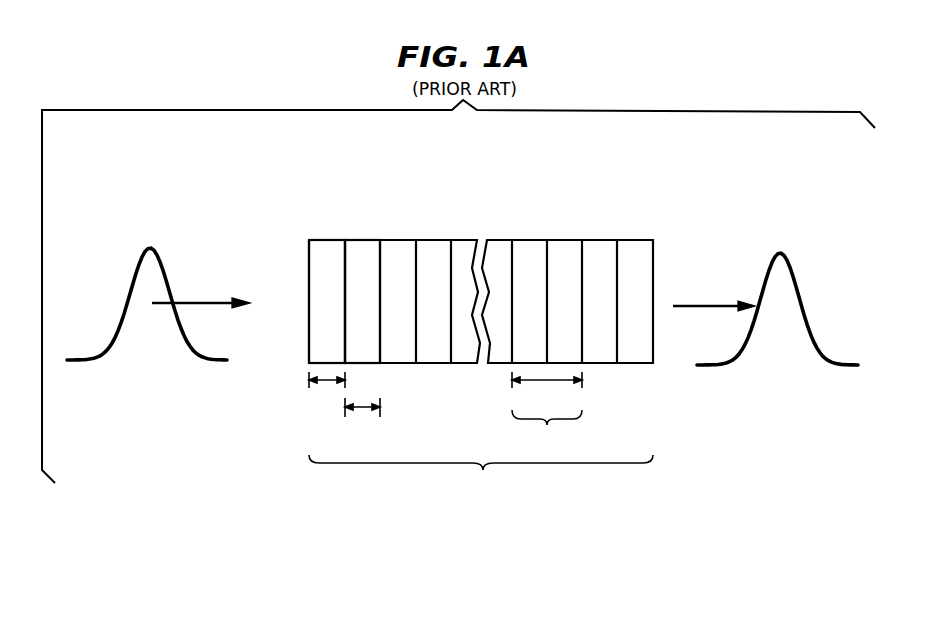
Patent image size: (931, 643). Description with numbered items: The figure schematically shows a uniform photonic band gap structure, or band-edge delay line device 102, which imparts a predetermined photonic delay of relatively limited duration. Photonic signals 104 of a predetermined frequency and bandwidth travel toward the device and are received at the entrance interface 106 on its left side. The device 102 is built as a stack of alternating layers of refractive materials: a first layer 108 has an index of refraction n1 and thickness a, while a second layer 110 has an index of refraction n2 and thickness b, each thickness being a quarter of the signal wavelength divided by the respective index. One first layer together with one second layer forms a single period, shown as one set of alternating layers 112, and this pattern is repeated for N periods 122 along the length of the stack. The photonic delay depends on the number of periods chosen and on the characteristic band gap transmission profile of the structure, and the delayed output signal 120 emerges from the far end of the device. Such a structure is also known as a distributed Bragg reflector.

The device 102 is at (543, 192).
The photonic signals 104 is at (150, 248).
The entrance interface 106 is at (309, 287).
The first layer 108 is at (323, 240).
The second layer 110 is at (362, 240).
The set of alternating layers 112 is at (547, 414).
The output light pulse 120 is at (793, 287).
The N periods 122 is at (538, 488).